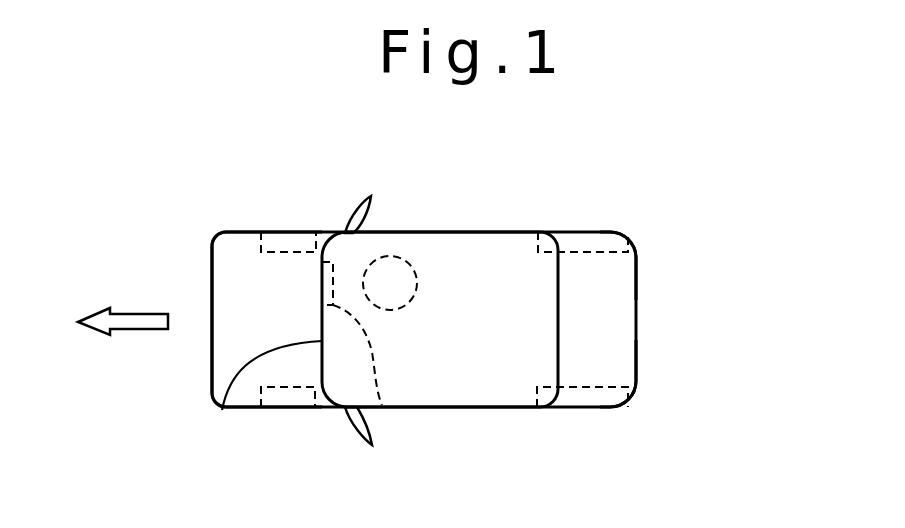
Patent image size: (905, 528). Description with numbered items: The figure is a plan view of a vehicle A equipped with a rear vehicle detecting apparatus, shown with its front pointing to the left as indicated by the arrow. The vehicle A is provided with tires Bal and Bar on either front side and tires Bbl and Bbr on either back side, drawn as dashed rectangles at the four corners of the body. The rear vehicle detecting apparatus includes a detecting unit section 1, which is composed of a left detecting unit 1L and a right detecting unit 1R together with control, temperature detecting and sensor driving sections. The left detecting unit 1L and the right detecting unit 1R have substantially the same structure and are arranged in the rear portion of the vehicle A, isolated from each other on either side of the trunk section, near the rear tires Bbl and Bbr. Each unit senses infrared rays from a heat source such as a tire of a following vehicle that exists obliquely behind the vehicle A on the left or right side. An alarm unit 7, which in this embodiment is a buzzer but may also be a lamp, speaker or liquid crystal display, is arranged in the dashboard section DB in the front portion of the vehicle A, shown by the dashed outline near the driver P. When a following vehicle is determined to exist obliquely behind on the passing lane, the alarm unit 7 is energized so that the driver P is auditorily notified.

The detecting unit section 1 is at (632, 212).
The right detecting unit 1R is at (632, 240).
The left detecting unit 1L is at (630, 400).
The vehicle A is at (237, 232).
The driver P is at (397, 256).
The alarm unit 7 is at (382, 405).
The dashboard section DB is at (222, 408).
The tire Bar is at (285, 242).
The tire Bal is at (287, 398).
The tire Bbr is at (573, 248).
The tire Bbl is at (565, 398).